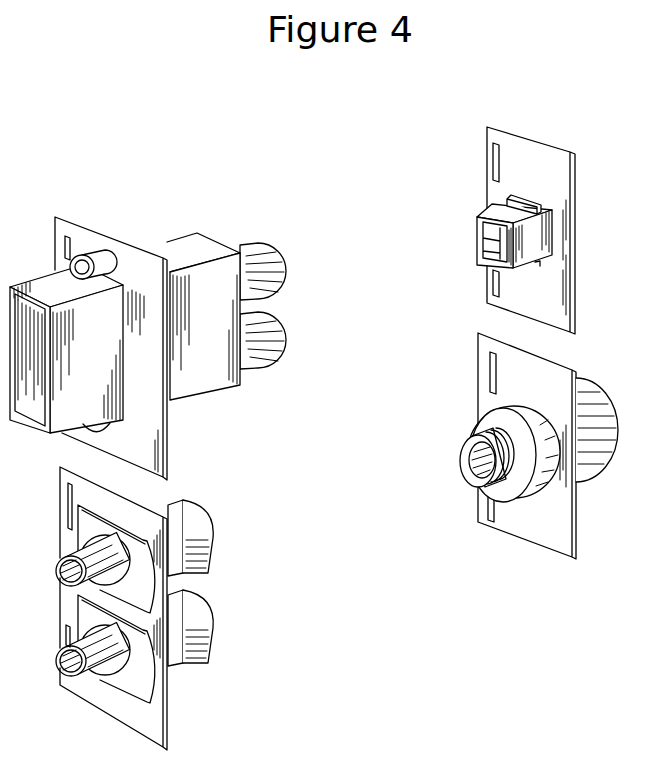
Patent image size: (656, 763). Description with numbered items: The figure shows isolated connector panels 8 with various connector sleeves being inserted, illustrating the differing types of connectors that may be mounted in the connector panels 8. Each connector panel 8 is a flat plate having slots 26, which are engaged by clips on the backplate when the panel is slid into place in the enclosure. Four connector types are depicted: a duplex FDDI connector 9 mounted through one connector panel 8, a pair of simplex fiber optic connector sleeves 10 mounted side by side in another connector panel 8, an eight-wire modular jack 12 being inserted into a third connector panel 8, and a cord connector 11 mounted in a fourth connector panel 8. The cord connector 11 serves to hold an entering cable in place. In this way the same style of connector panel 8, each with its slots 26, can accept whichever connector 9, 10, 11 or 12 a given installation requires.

The connector panel 8 is at (138, 396).
The duplex FDDI connector 9 is at (193, 335).
The simplex fiber optic connector sleeve 10 is at (212, 540).
The cord connector 11 is at (584, 427).
The 8-wire modular jack 12 is at (477, 232).
The slot 26 is at (66, 245).